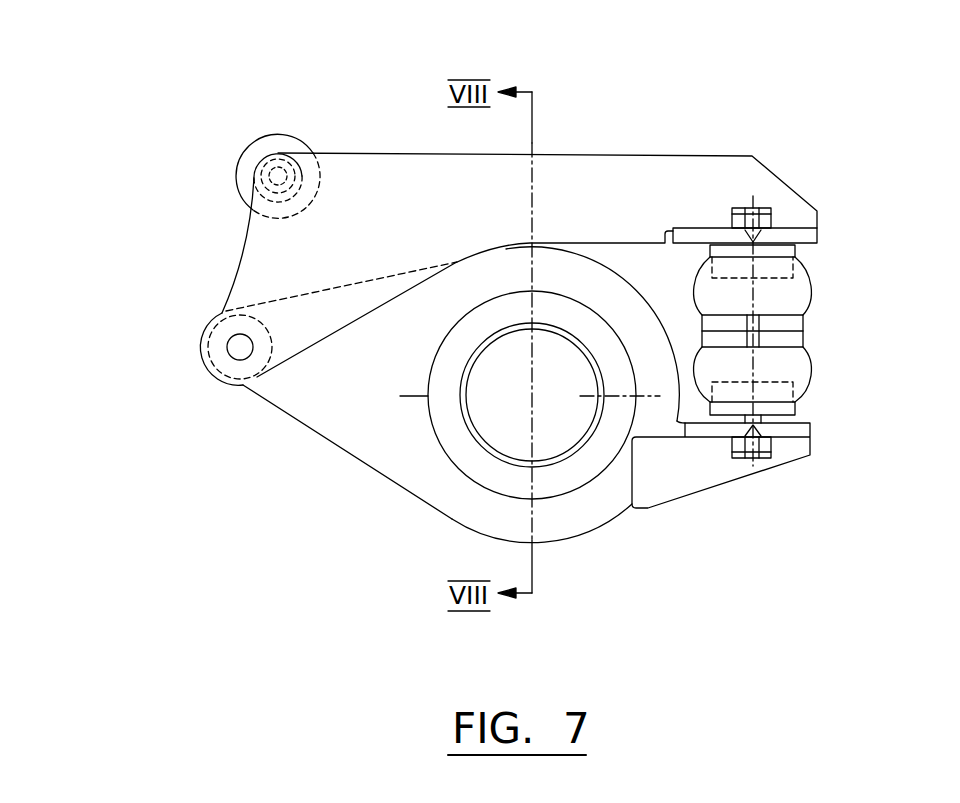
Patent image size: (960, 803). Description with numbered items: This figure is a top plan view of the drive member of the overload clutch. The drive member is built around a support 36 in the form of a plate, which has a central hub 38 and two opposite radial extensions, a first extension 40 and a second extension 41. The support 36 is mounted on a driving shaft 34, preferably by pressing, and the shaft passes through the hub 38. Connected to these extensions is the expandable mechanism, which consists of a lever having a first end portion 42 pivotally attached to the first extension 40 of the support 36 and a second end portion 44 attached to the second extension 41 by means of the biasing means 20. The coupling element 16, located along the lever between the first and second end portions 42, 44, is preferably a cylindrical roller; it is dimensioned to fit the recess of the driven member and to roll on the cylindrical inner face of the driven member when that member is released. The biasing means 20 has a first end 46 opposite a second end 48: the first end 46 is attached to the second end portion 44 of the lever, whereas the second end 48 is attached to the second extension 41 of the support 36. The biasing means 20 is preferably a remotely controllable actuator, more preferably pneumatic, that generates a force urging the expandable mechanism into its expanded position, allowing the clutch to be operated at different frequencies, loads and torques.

The coupling element 16 is at (250, 152).
The biasing means 20 is at (812, 332).
The driving shaft 34 is at (547, 488).
The support 36 is at (421, 499).
The hub 38 is at (612, 507).
The first extension 40 is at (252, 390).
The second extension 41 is at (722, 470).
The first end portion 42 is at (228, 308).
The second end portion 44 is at (760, 178).
The first end 46 is at (795, 253).
The second end 48 is at (795, 407).